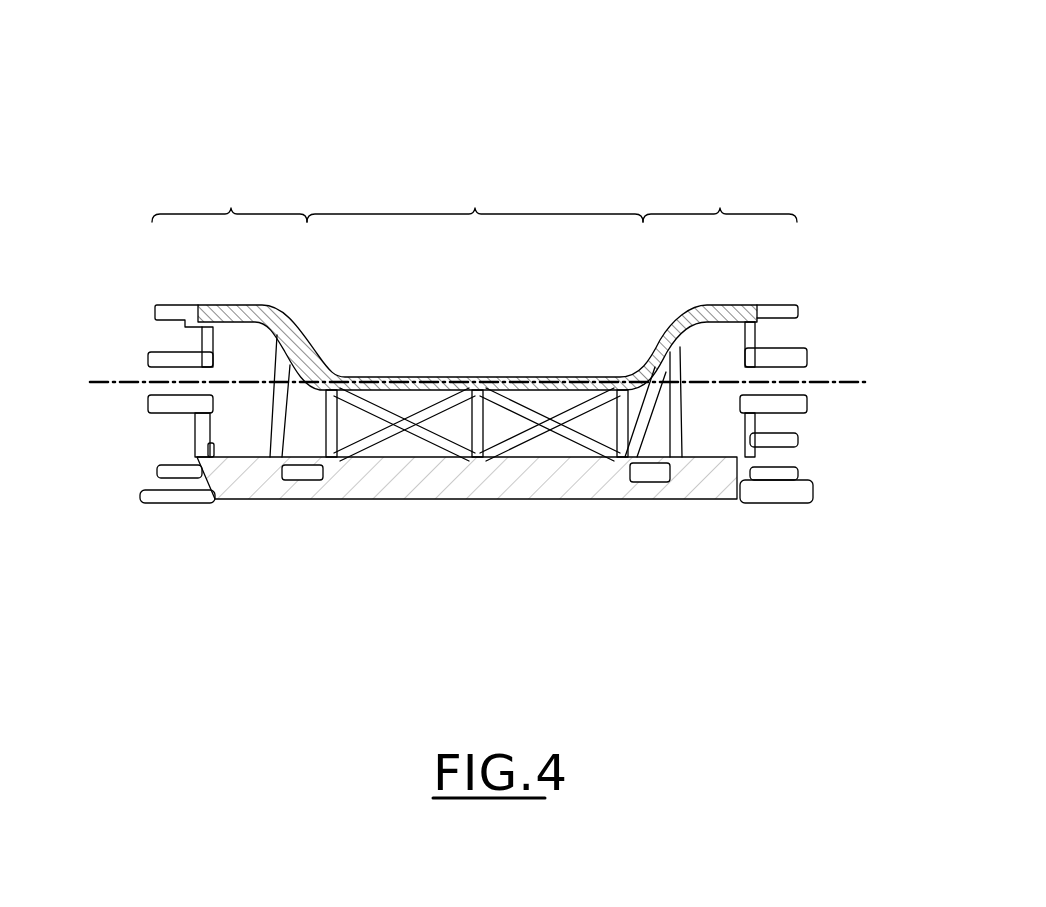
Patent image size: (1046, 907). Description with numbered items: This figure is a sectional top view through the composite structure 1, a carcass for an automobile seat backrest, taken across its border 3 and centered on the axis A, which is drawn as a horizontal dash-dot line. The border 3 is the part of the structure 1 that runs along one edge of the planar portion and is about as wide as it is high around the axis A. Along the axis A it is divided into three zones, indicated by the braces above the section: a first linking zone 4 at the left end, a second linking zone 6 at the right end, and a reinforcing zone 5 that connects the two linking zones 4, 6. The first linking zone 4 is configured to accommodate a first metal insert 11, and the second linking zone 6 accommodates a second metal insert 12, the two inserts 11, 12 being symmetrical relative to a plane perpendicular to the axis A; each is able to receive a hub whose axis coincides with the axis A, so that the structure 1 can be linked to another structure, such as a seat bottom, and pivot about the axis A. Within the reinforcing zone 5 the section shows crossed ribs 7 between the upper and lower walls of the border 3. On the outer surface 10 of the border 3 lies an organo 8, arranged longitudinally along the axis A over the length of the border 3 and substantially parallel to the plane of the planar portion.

The composite structure 1 is at (499, 287).
The border 3 is at (467, 453).
The first linking zone 4 is at (201, 180).
The reinforcing zone 5 is at (475, 180).
The second linking zone 6 is at (691, 180).
The rib 7 is at (542, 480).
The organo 8 is at (475, 327).
The outer surface 10 is at (475, 344).
The first metal insert 11 is at (131, 406).
The second metal insert 12 is at (828, 405).
The axis A is at (520, 428).